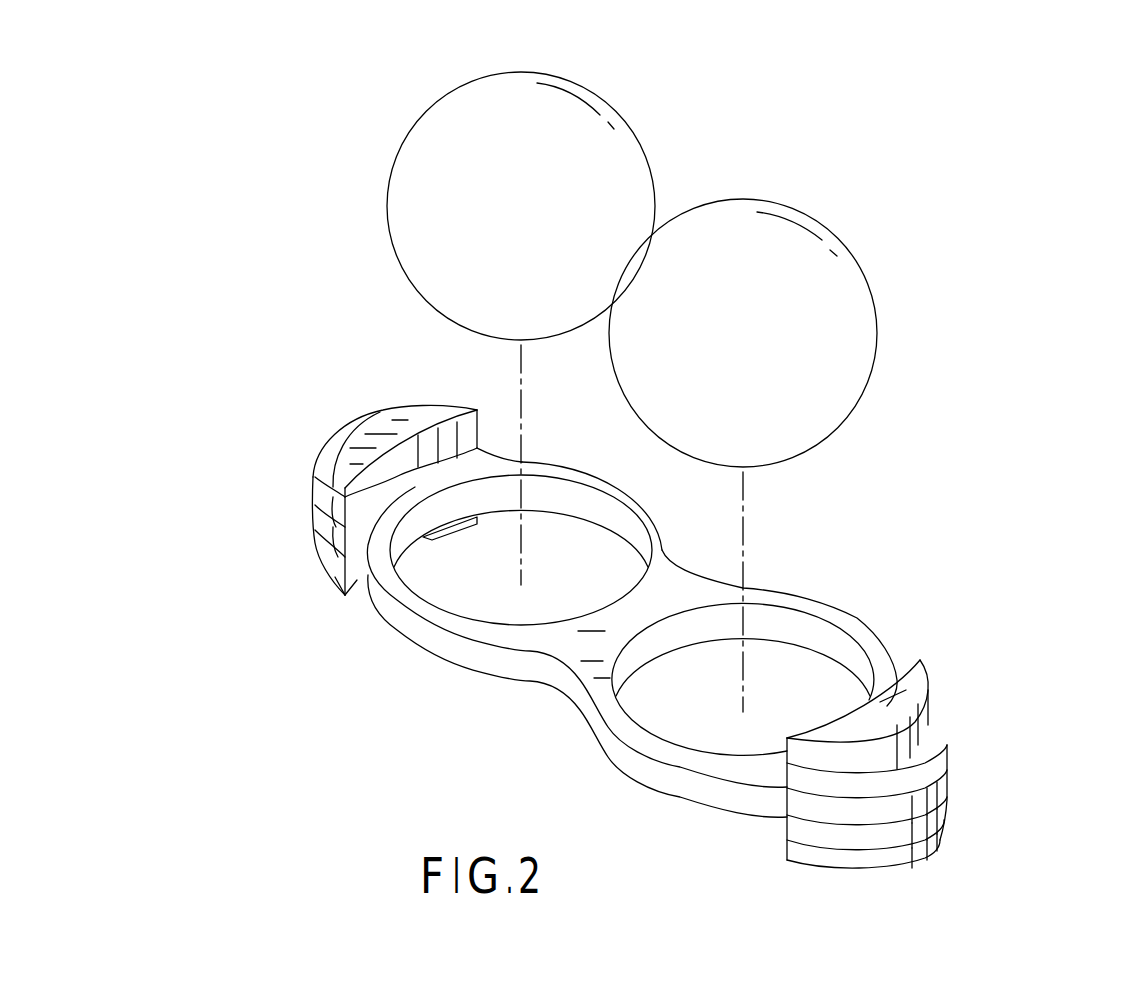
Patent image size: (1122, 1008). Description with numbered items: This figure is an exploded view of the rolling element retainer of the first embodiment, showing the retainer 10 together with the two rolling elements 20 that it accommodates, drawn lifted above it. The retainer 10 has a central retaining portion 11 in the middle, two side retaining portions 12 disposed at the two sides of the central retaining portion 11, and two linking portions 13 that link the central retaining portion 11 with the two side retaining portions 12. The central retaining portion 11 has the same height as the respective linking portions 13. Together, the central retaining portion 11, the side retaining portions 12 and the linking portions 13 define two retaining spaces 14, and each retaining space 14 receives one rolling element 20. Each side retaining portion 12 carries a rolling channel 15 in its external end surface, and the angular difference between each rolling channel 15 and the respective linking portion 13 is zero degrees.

The retainer 10 is at (872, 610).
The central retaining portion 11 is at (600, 627).
The side retaining portion 12 is at (382, 438).
The linking portion 13 is at (412, 613).
The retaining space 14 is at (470, 588).
The rolling channel 15 is at (318, 523).
The rolling element 20 is at (627, 98).